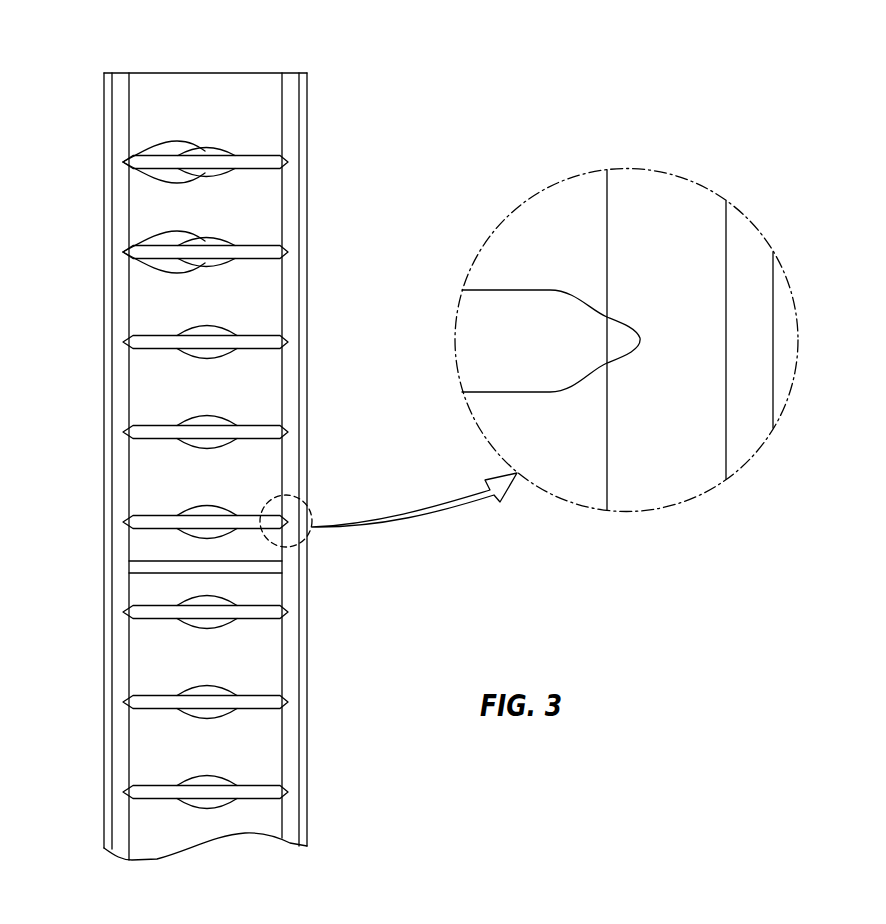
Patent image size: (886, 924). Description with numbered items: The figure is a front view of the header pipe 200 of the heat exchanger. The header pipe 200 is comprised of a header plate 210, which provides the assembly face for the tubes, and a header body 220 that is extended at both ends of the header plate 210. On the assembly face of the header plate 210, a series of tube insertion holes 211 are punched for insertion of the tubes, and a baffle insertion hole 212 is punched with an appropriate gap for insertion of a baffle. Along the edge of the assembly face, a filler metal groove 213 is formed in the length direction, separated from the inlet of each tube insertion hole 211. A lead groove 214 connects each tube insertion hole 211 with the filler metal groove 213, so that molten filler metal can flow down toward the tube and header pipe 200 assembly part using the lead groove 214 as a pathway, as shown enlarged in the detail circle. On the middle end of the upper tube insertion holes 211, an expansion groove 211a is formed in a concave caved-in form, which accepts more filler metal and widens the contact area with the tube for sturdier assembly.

The header pipe 200 is at (408, 466).
The header plate 210 is at (268, 636).
The header body 220 is at (305, 592).
The tube insertion hole 211 is at (257, 164).
The expansion groove 211a is at (127, 173).
The baffle insertion hole 212 is at (148, 566).
The filler metal groove 213 is at (123, 672).
The lead groove 214 is at (291, 342).